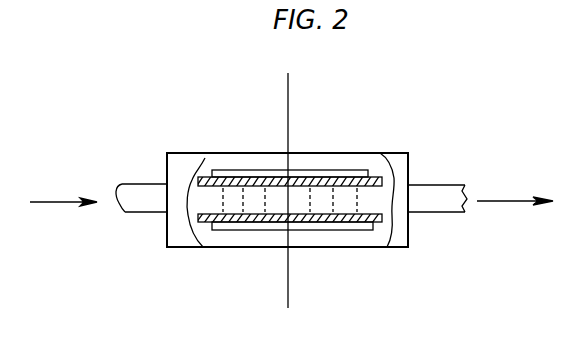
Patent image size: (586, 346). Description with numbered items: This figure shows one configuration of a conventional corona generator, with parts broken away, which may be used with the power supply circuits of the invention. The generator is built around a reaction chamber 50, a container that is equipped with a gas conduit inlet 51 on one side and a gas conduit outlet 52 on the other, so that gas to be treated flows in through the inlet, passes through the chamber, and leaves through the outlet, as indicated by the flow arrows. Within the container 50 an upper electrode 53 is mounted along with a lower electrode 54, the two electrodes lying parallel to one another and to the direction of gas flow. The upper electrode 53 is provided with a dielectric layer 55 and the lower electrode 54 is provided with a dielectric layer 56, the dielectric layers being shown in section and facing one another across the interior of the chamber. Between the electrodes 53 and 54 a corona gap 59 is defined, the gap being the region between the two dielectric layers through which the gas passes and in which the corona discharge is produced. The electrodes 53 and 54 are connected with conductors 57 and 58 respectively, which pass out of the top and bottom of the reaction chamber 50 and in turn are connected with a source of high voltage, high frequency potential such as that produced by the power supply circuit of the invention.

The reaction chamber 50 is at (410, 176).
The gas conduit inlet 51 is at (142, 197).
The gas conduit outlet 52 is at (433, 213).
The upper electrode 53 is at (344, 170).
The lower electrode 54 is at (346, 228).
The dielectric layer 55 is at (199, 177).
The dielectric layer 56 is at (212, 218).
The conductor 57 is at (289, 101).
The conductor 58 is at (289, 280).
The corona gap 59 is at (265, 197).